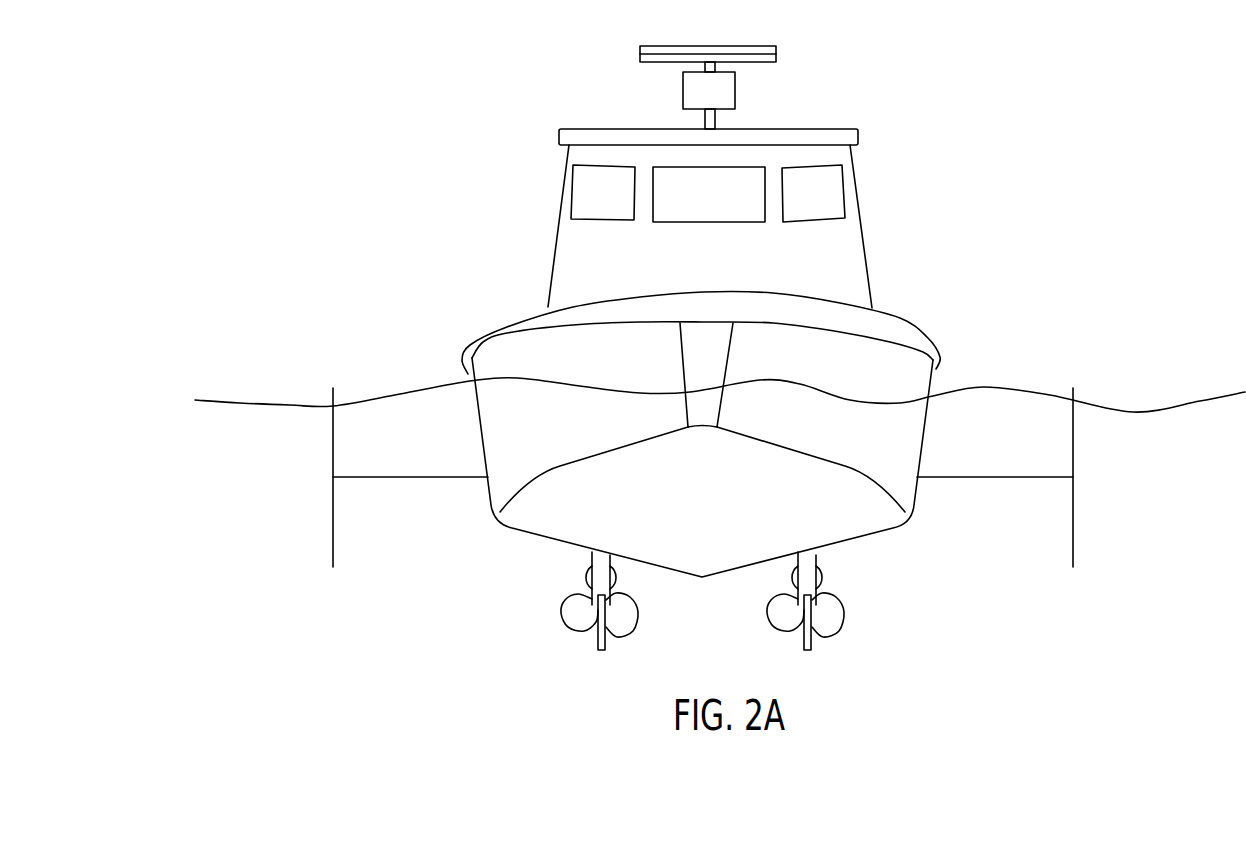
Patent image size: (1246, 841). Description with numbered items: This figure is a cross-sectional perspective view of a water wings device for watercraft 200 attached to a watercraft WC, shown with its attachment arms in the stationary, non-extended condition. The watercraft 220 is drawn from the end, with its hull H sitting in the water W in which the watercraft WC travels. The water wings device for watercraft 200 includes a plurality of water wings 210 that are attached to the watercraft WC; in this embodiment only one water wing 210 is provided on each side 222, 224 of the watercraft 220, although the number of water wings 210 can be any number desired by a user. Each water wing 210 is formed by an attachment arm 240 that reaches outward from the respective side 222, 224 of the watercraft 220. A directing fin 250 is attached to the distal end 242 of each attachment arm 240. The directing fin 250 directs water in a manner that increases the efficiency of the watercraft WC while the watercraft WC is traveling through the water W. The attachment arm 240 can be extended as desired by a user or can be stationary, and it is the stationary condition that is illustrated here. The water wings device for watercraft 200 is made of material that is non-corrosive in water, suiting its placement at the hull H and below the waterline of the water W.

The water wings device for watercraft 200 is at (298, 290).
The watercraft WC is at (858, 129).
The watercraft 220 is at (592, 509).
The side of the watercraft 222 is at (532, 475).
The side of the watercraft 224 is at (908, 481).
The hull H is at (533, 538).
The water W is at (397, 395).
The water wing 210 is at (325, 482).
The attachment arm 240 is at (435, 480).
The distal end 242 is at (333, 477).
The directing fin 250 is at (328, 425).